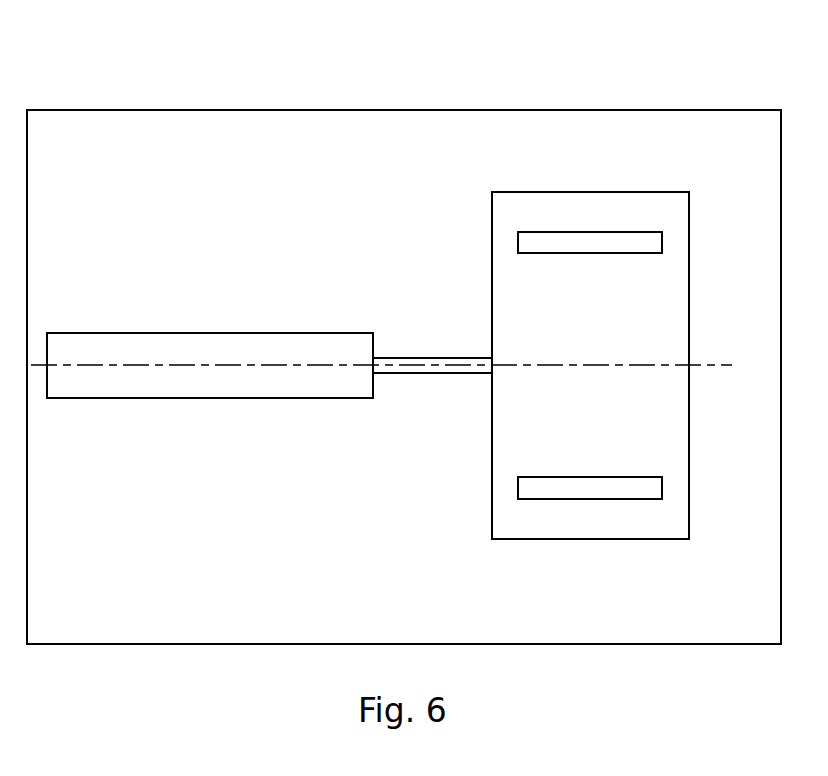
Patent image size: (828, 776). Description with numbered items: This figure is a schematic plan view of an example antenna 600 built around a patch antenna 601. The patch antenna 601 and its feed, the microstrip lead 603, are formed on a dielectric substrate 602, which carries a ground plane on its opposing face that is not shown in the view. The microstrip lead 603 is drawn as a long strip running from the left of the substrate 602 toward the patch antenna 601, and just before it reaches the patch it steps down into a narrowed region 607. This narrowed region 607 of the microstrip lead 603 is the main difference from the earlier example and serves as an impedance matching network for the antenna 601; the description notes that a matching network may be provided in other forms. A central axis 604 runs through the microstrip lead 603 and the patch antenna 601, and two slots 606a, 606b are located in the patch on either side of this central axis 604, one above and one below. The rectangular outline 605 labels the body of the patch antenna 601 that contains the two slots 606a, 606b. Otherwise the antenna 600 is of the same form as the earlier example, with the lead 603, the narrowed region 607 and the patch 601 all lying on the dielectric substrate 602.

The antenna 600 is at (108, 90).
The patch antenna 601 is at (474, 304).
The dielectric substrate 602 is at (355, 528).
The microstrip lead 603 is at (183, 333).
The central axis 604 is at (190, 366).
The housing / detector block 605 is at (491, 233).
The slot 606a is at (590, 253).
The slot 606b is at (592, 477).
The narrowed region 607 is at (400, 358).